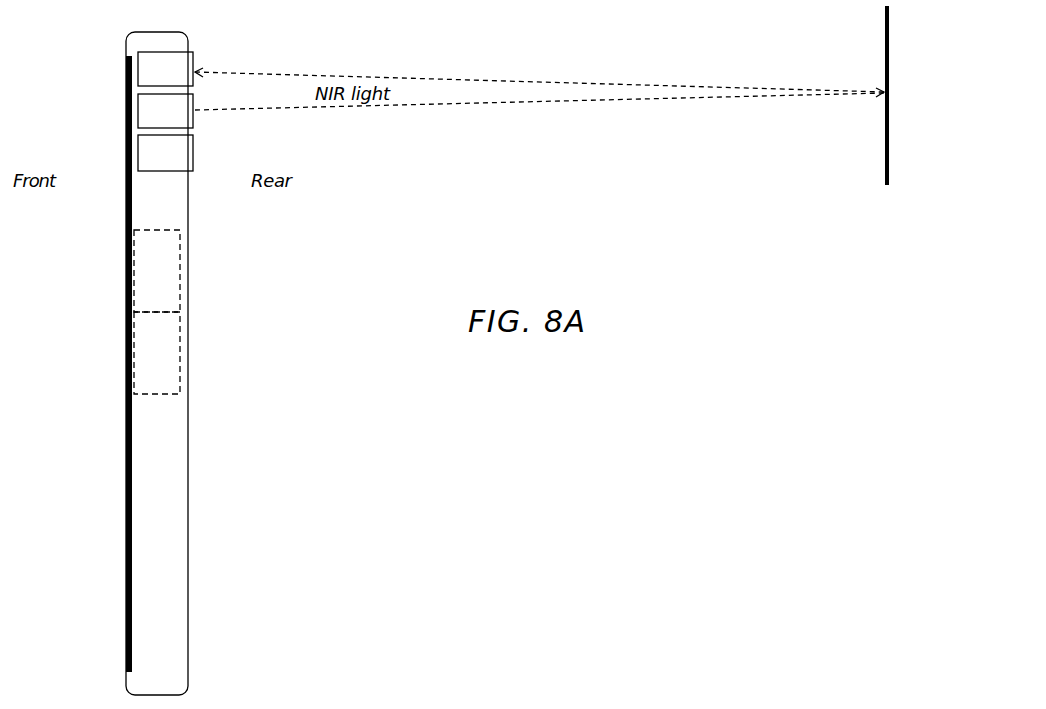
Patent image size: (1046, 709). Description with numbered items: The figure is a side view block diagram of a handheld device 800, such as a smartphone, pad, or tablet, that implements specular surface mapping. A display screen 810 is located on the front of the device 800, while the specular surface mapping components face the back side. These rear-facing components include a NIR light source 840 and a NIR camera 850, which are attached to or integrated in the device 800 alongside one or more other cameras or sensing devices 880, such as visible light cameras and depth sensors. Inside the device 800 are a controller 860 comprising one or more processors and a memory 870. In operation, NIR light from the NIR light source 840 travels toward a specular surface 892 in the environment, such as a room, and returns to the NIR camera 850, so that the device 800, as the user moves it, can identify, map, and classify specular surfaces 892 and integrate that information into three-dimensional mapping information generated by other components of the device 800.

The handheld device 800 is at (209, 502).
The display screen 810 is at (126, 410).
The NIR light source 840 is at (165, 111).
The NIR camera 850 is at (165, 69).
The controller 860 is at (157, 271).
The memory 870 is at (157, 353).
The other cameras or sensing devices 880 is at (165, 153).
The specular surfaces 892 is at (886, 162).